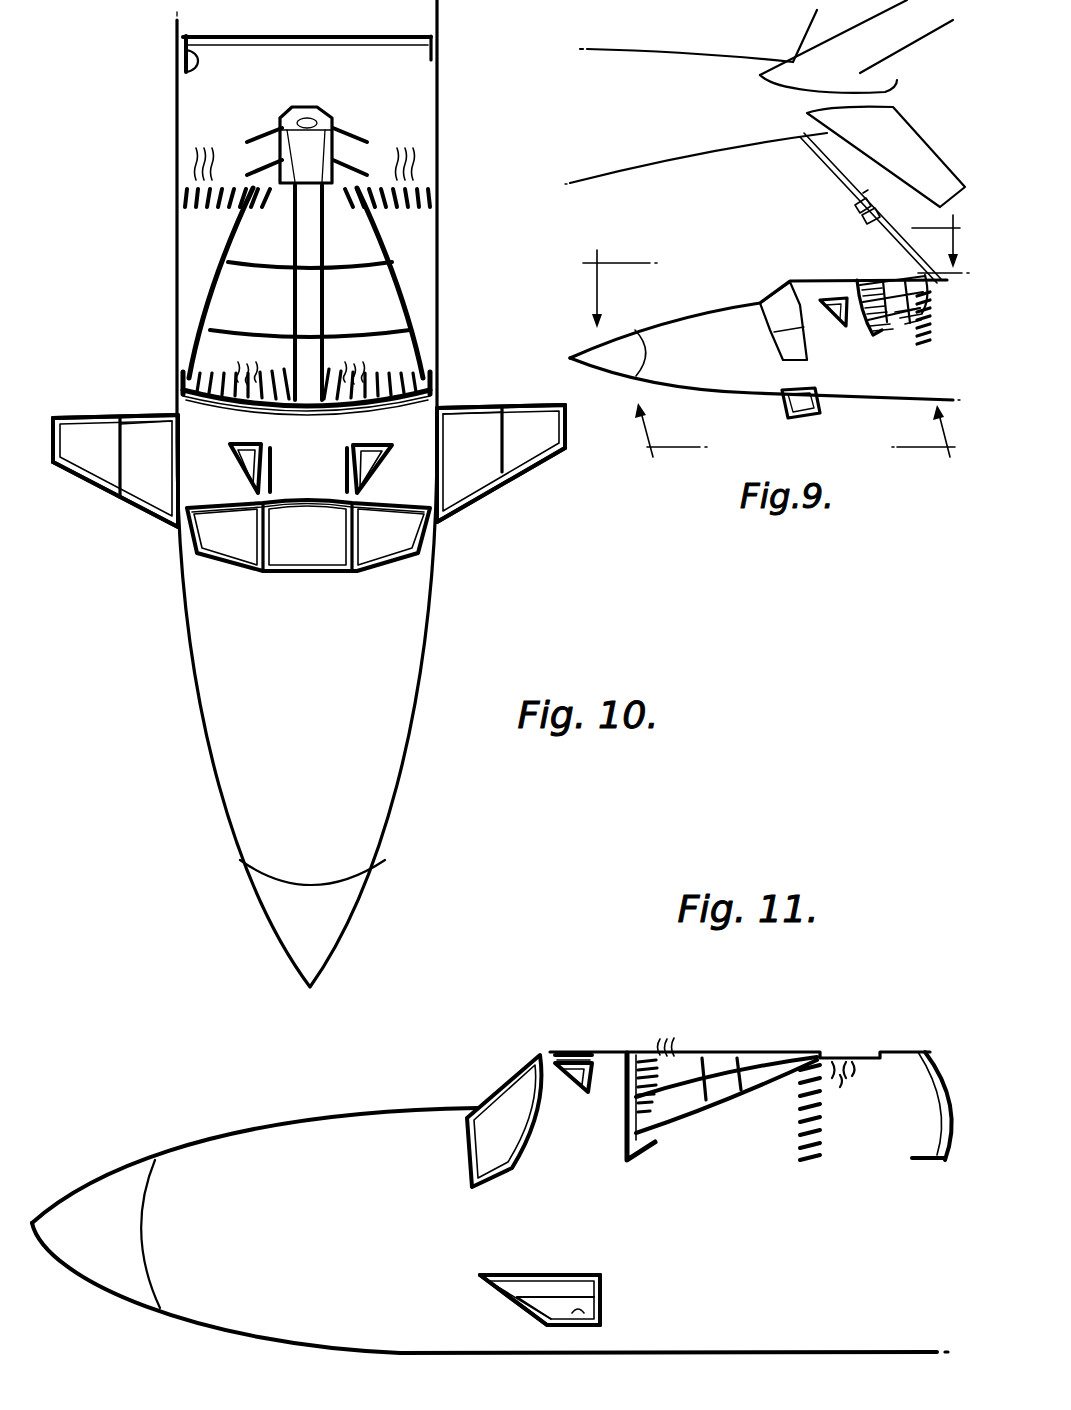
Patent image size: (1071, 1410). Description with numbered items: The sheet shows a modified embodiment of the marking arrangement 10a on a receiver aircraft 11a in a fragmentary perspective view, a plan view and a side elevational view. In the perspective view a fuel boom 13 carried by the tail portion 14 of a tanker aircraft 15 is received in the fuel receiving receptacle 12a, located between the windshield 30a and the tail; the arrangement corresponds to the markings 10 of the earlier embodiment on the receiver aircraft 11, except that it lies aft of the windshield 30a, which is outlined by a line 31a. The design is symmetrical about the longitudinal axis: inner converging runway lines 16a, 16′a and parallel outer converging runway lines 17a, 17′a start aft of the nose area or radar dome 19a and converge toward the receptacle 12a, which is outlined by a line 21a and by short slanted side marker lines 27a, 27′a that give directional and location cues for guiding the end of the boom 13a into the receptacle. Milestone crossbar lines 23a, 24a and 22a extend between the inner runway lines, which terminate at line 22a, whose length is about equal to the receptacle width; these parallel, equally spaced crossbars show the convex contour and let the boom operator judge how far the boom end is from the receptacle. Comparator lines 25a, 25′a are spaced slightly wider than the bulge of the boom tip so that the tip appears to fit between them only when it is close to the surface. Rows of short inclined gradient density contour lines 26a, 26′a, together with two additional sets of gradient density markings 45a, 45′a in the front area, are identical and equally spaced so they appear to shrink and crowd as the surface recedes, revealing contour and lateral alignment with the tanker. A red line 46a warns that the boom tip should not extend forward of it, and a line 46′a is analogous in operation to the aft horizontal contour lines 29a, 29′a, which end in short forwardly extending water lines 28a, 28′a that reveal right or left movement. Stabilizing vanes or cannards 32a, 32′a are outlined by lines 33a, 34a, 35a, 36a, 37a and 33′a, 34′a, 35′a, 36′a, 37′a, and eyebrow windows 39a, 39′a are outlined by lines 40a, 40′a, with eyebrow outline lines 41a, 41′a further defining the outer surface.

In FIG. 9, the marking arrangement 10 is at (754, 271).
In FIG. 9, the receiver aircraft 11 is at (795, 448).
In FIG. 9, the fuel boom 13 is at (895, 243).
In FIG. 9, the tail portion 14 is at (898, 92).
In FIG. 9, the tanker aircraft 15 is at (665, 56).
In FIG. 10, the marking arrangement 10a is at (168, 247).
In FIG. 9, the marking arrangement 10a is at (906, 328).
In FIG. 11, the marking arrangement 10a is at (708, 1042).
In FIG. 10, the aircraft 11a is at (185, 665).
In FIG. 9, the aircraft 11a is at (747, 392).
In FIG. 11, the aircraft 11a is at (230, 1131).
In FIG. 10, the fuel receiving receptacle 12a is at (293, 107).
In FIG. 9, the fuel receiving receptacle 12a is at (946, 333).
In FIG. 11, the fuel receiving receptacle 12a is at (885, 1054).
In FIG. 10, the fuel boom 13a is at (305, 106).
In FIG. 10, the inner converging runway line 16a is at (224, 290).
In FIG. 10, the inner converging runway line 16′a is at (410, 288).
In FIG. 11, the inner converging runway line 16′a is at (740, 1100).
In FIG. 10, the outer converging runway line 17a is at (215, 258).
In FIG. 10, the outer converging runway line 17′a is at (400, 253).
In FIG. 11, the outer converging runway line 17′a is at (688, 1118).
In FIG. 10, the radar dome 19a is at (272, 912).
In FIG. 9, the radar dome 19a is at (598, 347).
In FIG. 11, the radar dome 19a is at (82, 1178).
In FIG. 10, the receptacle outline line 21a is at (320, 105).
In FIG. 11, the receptacle outline line 21a is at (875, 1060).
In FIG. 10, the milestone crossbar line 22a is at (250, 228).
In FIG. 11, the milestone crossbar line 22a is at (815, 1053).
In FIG. 10, the milestone crossbar line 23a is at (262, 344).
In FIG. 11, the milestone crossbar line 23a is at (703, 1056).
In FIG. 10, the milestone crossbar line 24a is at (345, 266).
In FIG. 11, the milestone crossbar line 24a is at (745, 1058).
In FIG. 10, the comparator line 25a is at (262, 266).
In FIG. 10, the comparator line 25′a is at (330, 322).
In FIG. 11, the comparator line 25′a is at (770, 1052).
In FIG. 10, the gradient density contour line 26a is at (224, 162).
In FIG. 10, the gradient density contour line 26′a is at (387, 167).
In FIG. 11, the gradient density contour line 26′a is at (826, 1140).
In FIG. 10, the side marker line 27a is at (256, 140).
In FIG. 10, the side marker line 27′a is at (367, 145).
In FIG. 11, the side marker line 27′a is at (862, 1073).
In FIG. 10, the water line 28a is at (176, 50).
In FIG. 10, the water line 28′a is at (436, 52).
In FIG. 11, the water line 28′a is at (905, 1165).
In FIG. 10, the aft horizontal contour line 29a is at (186, 68).
In FIG. 11, the aft horizontal contour line 29a is at (912, 1160).
In FIG. 10, the aft horizontal contour line 29′a is at (183, 40).
In FIG. 11, the aft horizontal contour line 29′a is at (956, 1145).
In FIG. 10, the windshield 30a is at (307, 522).
In FIG. 9, the windshield 30a is at (783, 321).
In FIG. 11, the windshield 30a is at (512, 1100).
In FIG. 10, the windscreen outline line 31a is at (285, 575).
In FIG. 11, the windscreen outline line 31a is at (525, 1162).
In FIG. 10, the stabilizing vane 32a is at (55, 418).
In FIG. 10, the stabilizing vane 32′a is at (565, 452).
In FIG. 11, the stabilizing vane 32′a is at (567, 1326).
In FIG. 10, the vane outline line 33a is at (130, 512).
In FIG. 10, the vane outline line 33′a is at (470, 505).
In FIG. 11, the vane outline line 33′a is at (492, 1284).
In FIG. 10, the vane outline line 34a is at (130, 416).
In FIG. 10, the vane outline line 34′a is at (505, 406).
In FIG. 11, the vane outline line 34′a is at (602, 1287).
In FIG. 10, the vane outline line 35a is at (52, 465).
In FIG. 10, the vane outline line 35′a is at (565, 430).
In FIG. 11, the vane outline line 35′a is at (602, 1313).
In FIG. 10, the vane outline line 36a is at (170, 447).
In FIG. 10, the vane outline line 36′a is at (446, 462).
In FIG. 11, the vane outline line 36′a is at (545, 1277).
In FIG. 10, the vane outline line 37a is at (118, 440).
In FIG. 10, the vane outline line 37′a is at (505, 455).
In FIG. 11, the vane outline line 37′a is at (520, 1305).
In FIG. 10, the eyebrow window 39a is at (245, 482).
In FIG. 9, the eyebrow window 39a is at (833, 312).
In FIG. 10, the eyebrow window 39′a is at (376, 482).
In FIG. 11, the eyebrow window 39′a is at (570, 1090).
In FIG. 10, the eyebrow window outline line 40a is at (230, 468).
In FIG. 10, the eyebrow window outline line 40′a is at (392, 452).
In FIG. 11, the eyebrow window outline line 40′a is at (592, 1094).
In FIG. 10, the eyebrow outline line 41a is at (275, 470).
In FIG. 10, the eyebrow outline line 41′a is at (345, 455).
In FIG. 11, the eyebrow outline line 41′a is at (568, 1054).
In FIG. 10, the gradient density contour markings 45a is at (243, 369).
In FIG. 10, the gradient density contour markings 45′a is at (370, 368).
In FIG. 11, the gradient density contour markings 45′a is at (665, 1043).
In FIG. 10, the warning line 46a is at (372, 408).
In FIG. 10, the contour line 46′a is at (250, 405).
In FIG. 11, the contour line 46′a is at (654, 1143).